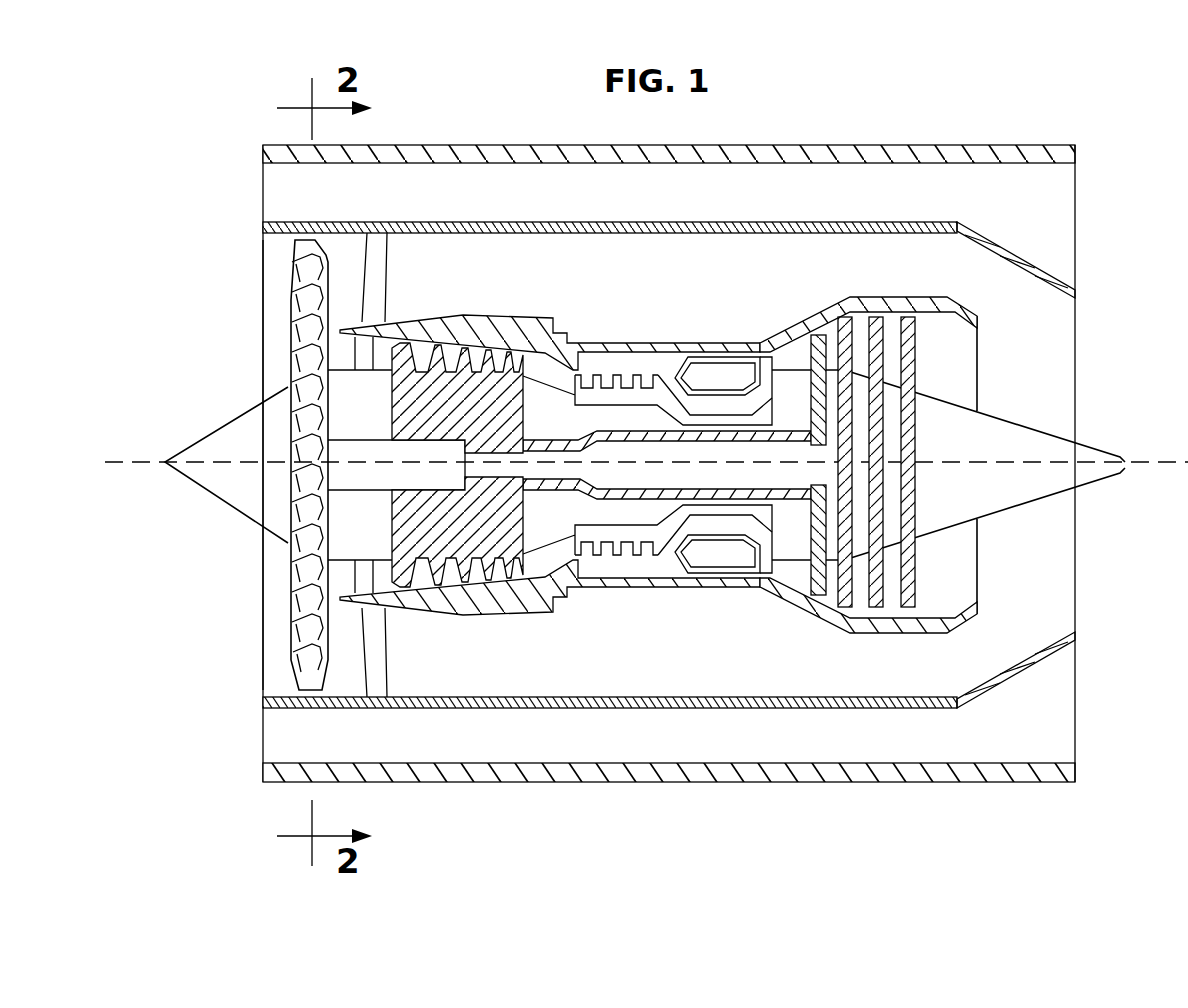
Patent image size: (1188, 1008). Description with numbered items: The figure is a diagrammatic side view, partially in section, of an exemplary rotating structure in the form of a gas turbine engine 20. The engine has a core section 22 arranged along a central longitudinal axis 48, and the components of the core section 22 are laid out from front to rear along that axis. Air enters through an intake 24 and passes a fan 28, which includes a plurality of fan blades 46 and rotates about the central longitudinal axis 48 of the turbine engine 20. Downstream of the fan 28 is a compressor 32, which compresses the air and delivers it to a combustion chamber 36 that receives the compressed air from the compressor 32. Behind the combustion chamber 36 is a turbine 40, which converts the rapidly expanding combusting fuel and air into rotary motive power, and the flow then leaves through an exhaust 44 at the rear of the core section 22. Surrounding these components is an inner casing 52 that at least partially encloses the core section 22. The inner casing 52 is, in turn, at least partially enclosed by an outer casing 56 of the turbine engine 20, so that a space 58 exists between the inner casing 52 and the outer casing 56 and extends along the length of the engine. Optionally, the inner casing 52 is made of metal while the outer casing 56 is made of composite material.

The gas turbine engine 20 is at (1008, 105).
The core section 22 is at (640, 666).
The intake 24 is at (245, 672).
The fan 28 is at (290, 262).
The compressor 32 is at (448, 330).
The combustion chamber 36 is at (725, 555).
The turbine 40 is at (878, 398).
The exhaust 44 is at (978, 548).
The fan blades 46 is at (307, 298).
The central longitudinal axis 48 is at (150, 455).
The inner casing 52 is at (330, 222).
The outer casing 56 is at (796, 145).
The space 58 is at (858, 197).